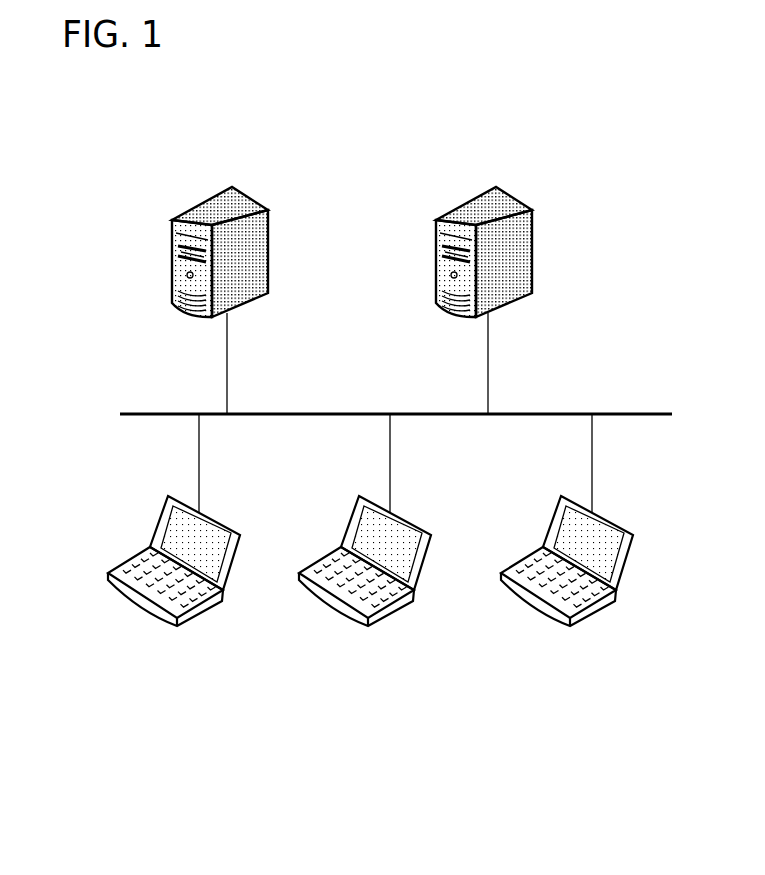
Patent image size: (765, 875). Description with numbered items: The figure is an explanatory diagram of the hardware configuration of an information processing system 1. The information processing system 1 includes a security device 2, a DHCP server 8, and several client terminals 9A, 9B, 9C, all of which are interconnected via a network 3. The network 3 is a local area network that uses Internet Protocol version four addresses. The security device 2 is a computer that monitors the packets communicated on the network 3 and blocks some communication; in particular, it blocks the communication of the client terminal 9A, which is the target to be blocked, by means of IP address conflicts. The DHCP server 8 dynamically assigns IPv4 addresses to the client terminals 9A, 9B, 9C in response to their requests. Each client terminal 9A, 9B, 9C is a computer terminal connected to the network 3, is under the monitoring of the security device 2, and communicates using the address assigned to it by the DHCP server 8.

The information processing system 1 is at (375, 460).
The security device 2 is at (219, 190).
The network 3 is at (600, 412).
The DHCP server 8 is at (497, 187).
The client terminal 9A is at (193, 622).
The client terminal 9B is at (380, 622).
The client terminal 9C is at (580, 622).